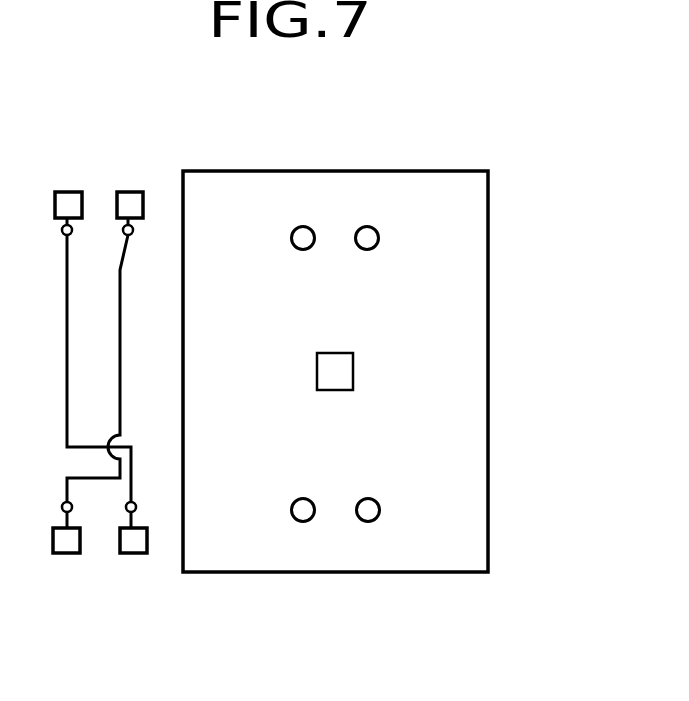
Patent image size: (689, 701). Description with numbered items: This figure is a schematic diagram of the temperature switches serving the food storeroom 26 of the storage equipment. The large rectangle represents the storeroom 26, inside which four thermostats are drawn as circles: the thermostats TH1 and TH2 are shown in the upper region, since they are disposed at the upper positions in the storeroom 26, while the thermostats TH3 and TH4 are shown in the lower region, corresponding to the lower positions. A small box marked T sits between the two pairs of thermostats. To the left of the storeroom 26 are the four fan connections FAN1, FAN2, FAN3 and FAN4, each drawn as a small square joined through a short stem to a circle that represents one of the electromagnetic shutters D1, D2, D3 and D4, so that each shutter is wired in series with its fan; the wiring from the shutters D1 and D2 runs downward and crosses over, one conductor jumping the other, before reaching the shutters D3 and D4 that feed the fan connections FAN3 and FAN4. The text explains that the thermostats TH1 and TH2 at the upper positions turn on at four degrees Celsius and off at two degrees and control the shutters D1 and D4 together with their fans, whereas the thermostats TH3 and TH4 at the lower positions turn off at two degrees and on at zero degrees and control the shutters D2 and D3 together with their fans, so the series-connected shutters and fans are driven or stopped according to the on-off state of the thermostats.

The storeroom 26 is at (488, 297).
The thermostat TH1 is at (299, 221).
The thermostat TH2 is at (368, 221).
The thermostat TH3 is at (300, 490).
The thermostat TH4 is at (369, 490).
The temperature sensor / timer T is at (335, 371).
The fan 1 connector FAN1 is at (62, 169).
The fan 2 connector FAN2 is at (131, 169).
The fan 3 connector FAN3 is at (63, 581).
The fan 4 connector FAN4 is at (133, 581).
The electromagnetic shutter D1 is at (96, 360).
The electromagnetic shutter D2 is at (121, 360).
The electromagnetic shutter D3 is at (86, 509).
The electromagnetic shutter D4 is at (150, 509).